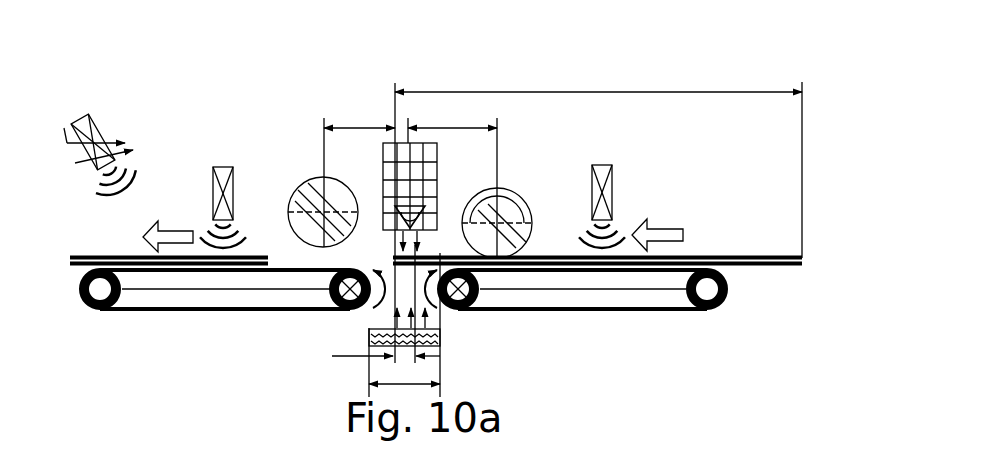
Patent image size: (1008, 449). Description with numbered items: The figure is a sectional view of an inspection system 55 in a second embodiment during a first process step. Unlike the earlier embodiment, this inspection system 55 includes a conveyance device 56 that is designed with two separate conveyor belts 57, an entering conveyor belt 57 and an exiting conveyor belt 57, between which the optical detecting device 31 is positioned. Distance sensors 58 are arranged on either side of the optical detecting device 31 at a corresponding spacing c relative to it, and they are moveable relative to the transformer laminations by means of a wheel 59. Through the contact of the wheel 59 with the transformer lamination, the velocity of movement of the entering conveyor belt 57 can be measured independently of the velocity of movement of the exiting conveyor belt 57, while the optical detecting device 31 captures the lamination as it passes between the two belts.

The inspection system 55 is at (124, 69).
The conveyance device 56 is at (228, 346).
The conveyor belt 57 is at (183, 309).
The distance sensor 58 is at (314, 175).
The wheel 59 is at (303, 194).
The optical detecting device 31 is at (443, 187).